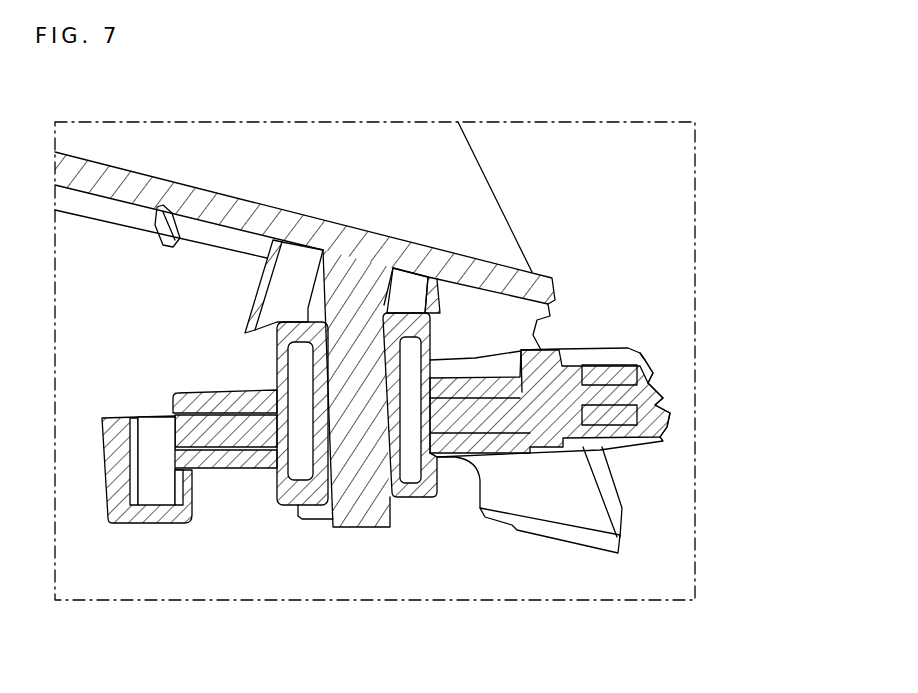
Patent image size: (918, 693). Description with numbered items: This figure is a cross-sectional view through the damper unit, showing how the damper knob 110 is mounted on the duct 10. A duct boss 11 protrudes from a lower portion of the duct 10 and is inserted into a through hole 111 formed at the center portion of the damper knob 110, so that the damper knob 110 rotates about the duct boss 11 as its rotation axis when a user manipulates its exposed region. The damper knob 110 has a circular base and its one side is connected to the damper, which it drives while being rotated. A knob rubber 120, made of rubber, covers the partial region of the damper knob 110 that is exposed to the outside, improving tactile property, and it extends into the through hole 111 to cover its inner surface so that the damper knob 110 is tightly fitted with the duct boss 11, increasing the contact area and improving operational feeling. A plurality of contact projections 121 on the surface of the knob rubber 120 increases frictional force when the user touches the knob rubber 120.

The duct 10 is at (473, 267).
The duct boss 11 is at (362, 500).
The through hole 111 is at (303, 467).
The damper knob 110 is at (517, 413).
The knob rubber 120 is at (417, 490).
The contact projections 121 is at (655, 383).